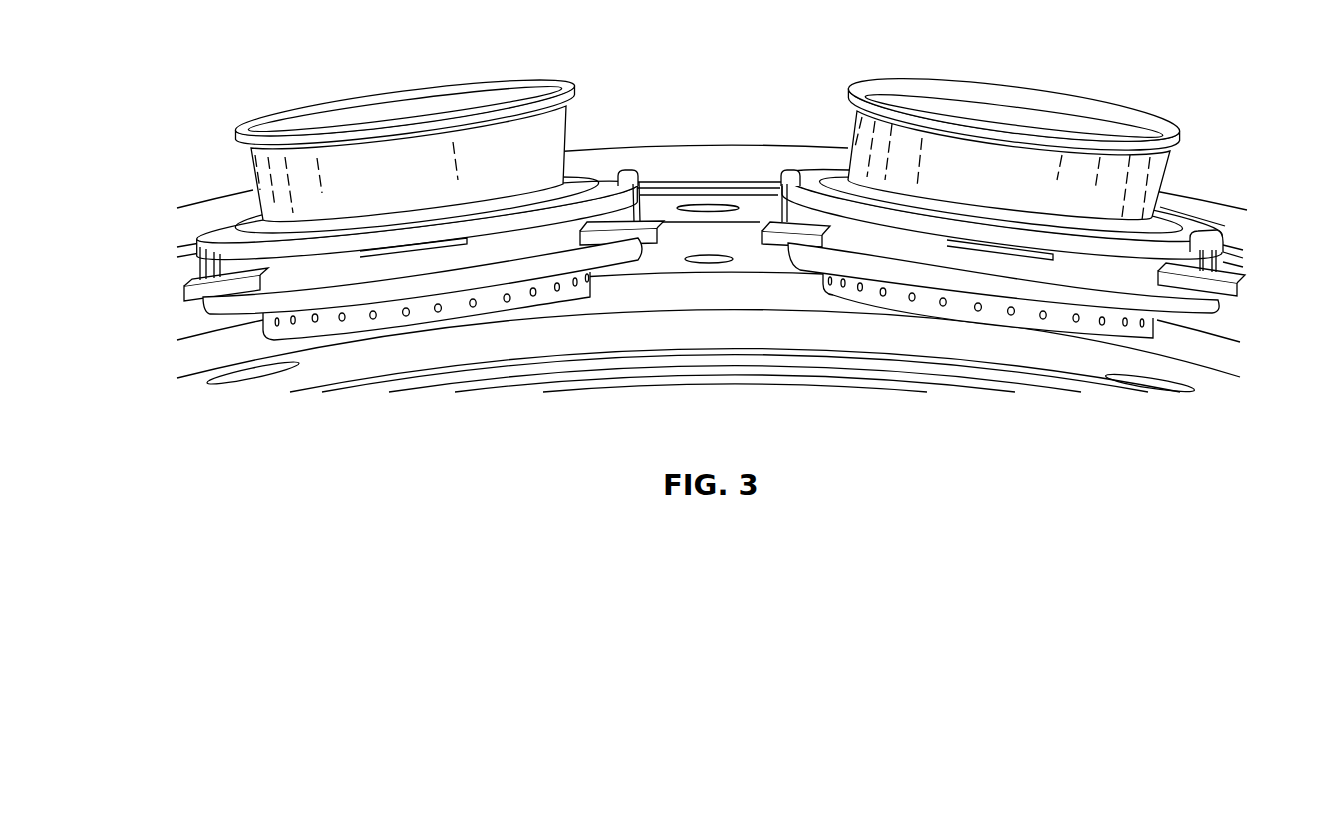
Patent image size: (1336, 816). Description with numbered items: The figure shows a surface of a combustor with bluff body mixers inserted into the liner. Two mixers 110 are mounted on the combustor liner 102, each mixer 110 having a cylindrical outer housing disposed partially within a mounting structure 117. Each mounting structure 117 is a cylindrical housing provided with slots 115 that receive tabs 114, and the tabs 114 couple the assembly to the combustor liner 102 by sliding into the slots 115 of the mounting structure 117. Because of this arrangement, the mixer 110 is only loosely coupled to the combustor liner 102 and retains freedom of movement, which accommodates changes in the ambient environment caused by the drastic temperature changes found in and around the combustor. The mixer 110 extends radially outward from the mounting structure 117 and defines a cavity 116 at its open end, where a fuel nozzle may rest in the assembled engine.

The combustor liner 102 is at (727, 243).
The mixer 110 is at (252, 168).
The tabs 114 is at (651, 234).
The slots 115 is at (633, 182).
The cavity 116 is at (373, 121).
The mounting structure 117 is at (218, 233).